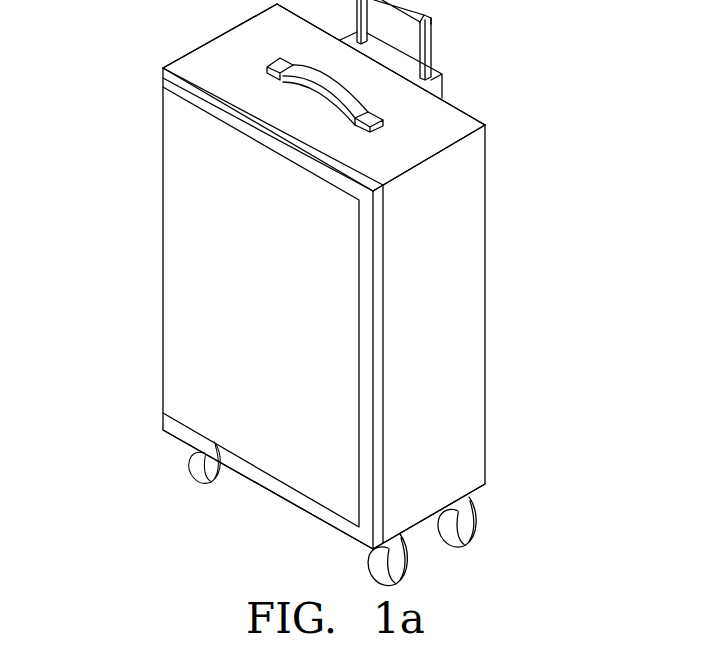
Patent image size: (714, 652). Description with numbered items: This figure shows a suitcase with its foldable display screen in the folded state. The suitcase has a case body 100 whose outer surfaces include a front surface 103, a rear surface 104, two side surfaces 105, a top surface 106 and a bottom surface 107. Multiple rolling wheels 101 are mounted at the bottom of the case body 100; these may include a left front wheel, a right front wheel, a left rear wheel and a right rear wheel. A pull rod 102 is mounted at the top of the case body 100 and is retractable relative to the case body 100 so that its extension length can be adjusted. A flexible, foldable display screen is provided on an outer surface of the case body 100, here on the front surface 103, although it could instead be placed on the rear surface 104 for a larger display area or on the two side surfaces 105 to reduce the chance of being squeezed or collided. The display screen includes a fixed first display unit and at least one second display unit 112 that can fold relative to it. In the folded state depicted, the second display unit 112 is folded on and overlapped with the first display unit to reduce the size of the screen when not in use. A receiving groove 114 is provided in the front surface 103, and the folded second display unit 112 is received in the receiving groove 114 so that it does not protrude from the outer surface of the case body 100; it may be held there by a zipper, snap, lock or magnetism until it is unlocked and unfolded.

The case body 100 is at (505, 330).
The rolling wheels 101 is at (475, 520).
The pull rod 102 is at (435, 47).
The front surface 103 is at (168, 78).
The rear surface 104 is at (465, 108).
The side surfaces 105 is at (458, 412).
The top surface 106 is at (210, 55).
The bottom surface 107 is at (172, 437).
The second display unit 112 is at (187, 198).
The receiving groove 114 is at (359, 222).